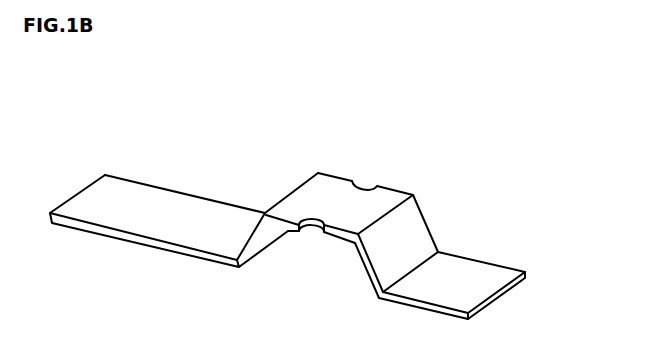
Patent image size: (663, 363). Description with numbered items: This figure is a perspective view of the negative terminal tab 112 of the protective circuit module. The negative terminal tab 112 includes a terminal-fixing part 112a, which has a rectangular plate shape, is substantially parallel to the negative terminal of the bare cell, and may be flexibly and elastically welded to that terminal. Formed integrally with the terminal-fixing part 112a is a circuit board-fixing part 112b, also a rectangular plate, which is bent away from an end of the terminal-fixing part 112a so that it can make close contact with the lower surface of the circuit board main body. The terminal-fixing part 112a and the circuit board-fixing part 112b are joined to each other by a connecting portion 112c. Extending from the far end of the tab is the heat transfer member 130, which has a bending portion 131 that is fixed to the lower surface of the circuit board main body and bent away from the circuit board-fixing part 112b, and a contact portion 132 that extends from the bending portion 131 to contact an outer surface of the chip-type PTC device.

The negative terminal tab 112 is at (290, 118).
The terminal-fixing part 112a is at (175, 208).
The circuit board-fixing part 112b is at (310, 193).
The connecting portion 112c is at (248, 230).
The heat transfer member 130 is at (527, 207).
The bending portion 131 is at (417, 223).
The contact portion 132 is at (485, 270).